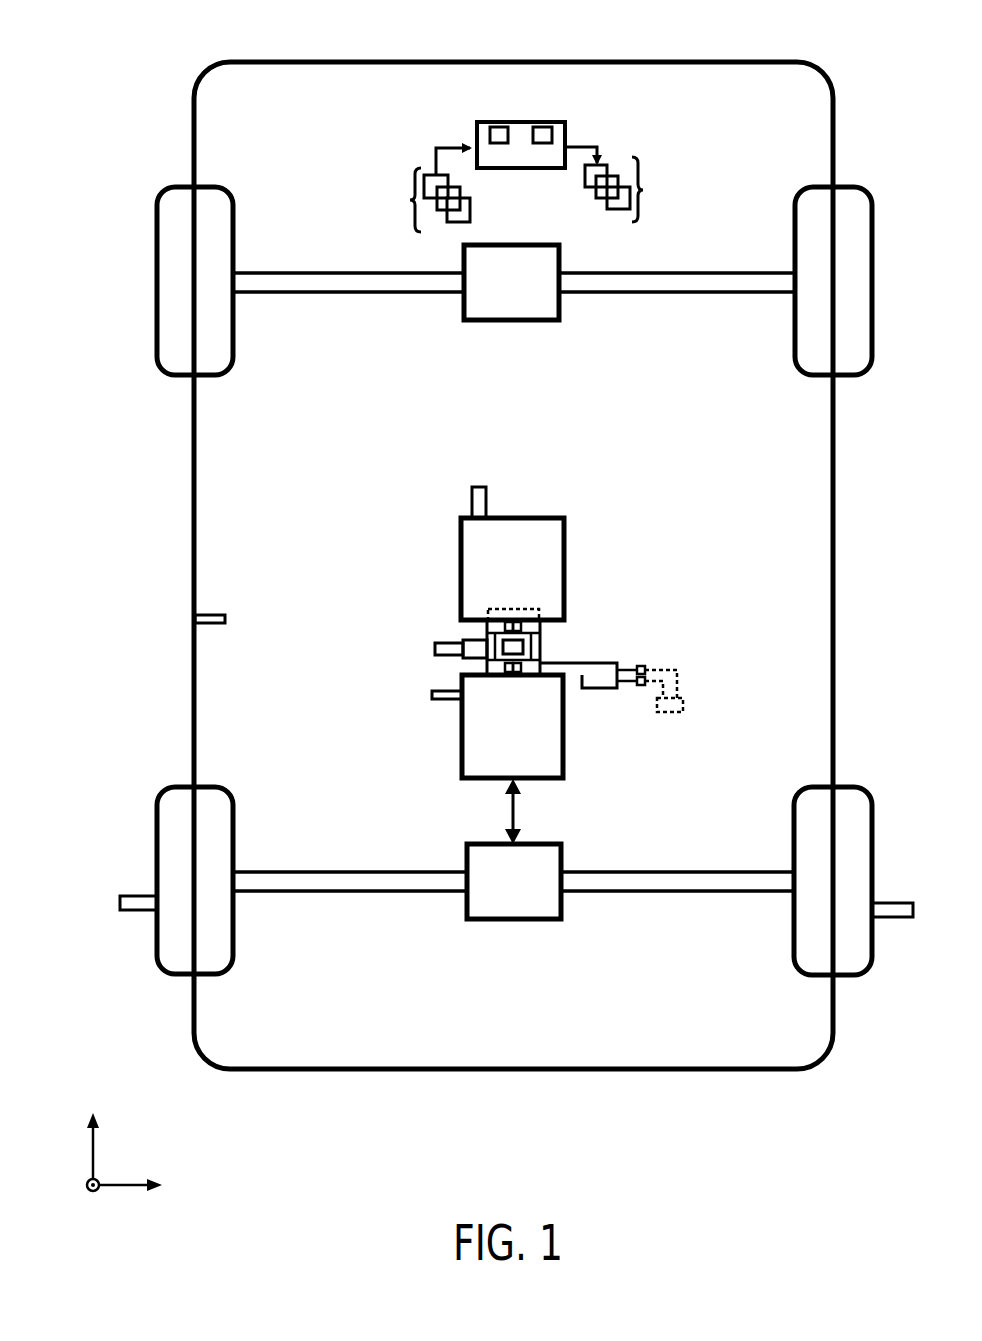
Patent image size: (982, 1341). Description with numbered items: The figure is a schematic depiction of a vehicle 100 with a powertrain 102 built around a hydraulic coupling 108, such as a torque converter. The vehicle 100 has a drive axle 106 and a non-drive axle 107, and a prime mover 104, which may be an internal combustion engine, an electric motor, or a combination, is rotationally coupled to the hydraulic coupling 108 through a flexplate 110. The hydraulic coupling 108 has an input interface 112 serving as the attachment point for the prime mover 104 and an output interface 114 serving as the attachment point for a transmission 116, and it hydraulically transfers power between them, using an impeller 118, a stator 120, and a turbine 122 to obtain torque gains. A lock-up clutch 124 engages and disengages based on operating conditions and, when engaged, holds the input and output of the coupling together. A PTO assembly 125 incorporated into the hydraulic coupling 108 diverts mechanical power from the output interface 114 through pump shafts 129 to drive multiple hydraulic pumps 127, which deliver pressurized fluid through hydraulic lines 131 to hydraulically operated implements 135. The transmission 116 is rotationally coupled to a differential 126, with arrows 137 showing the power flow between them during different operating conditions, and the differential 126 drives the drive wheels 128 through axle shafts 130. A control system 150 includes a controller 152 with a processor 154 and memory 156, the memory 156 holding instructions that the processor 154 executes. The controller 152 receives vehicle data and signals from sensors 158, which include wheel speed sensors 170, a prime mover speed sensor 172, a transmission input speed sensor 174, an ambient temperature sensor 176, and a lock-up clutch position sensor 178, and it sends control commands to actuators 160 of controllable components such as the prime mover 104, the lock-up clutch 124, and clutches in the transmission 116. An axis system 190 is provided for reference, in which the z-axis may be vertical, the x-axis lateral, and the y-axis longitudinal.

The vehicle 100 is at (852, 54).
The powertrain 102 is at (572, 641).
The prime mover 104 is at (565, 553).
The drive axle 106 is at (514, 925).
The non-drive axle 107 is at (470, 360).
The hydraulic coupling 108 is at (600, 627).
The flexplate 110 is at (533, 609).
The input interface 112 is at (487, 628).
The output interface 114 is at (487, 667).
The transmission 116 is at (462, 767).
The impeller 118 is at (540, 633).
The stator 120 is at (540, 643).
The turbine 122 is at (540, 653).
The lock-up clutch 124 is at (435, 646).
The PTO assembly 125 is at (647, 744).
The differential 126 is at (515, 919).
The hydraulic pumps 127 is at (640, 686).
The drive wheels 128 is at (156, 957).
The pump shafts 129 is at (630, 687).
The axle shafts 130 is at (340, 893).
The hydraulic lines 131 is at (680, 678).
The hydraulically operated implements 135 is at (680, 713).
The arrows 137 is at (510, 813).
The control system 150 is at (506, 154).
The controller 152 is at (518, 122).
The processor 154 is at (485, 123).
The memory 156 is at (557, 123).
The sensors 158 is at (422, 200).
The actuators 160 is at (634, 189).
The wheel speed sensors 170 is at (892, 903).
The prime mover speed sensor 172 is at (478, 487).
The transmission input speed sensor 174 is at (437, 703).
The ambient temperature sensor 176 is at (210, 613).
The lock-up clutch position sensor 178 is at (463, 655).
The axis system 190 is at (133, 1147).